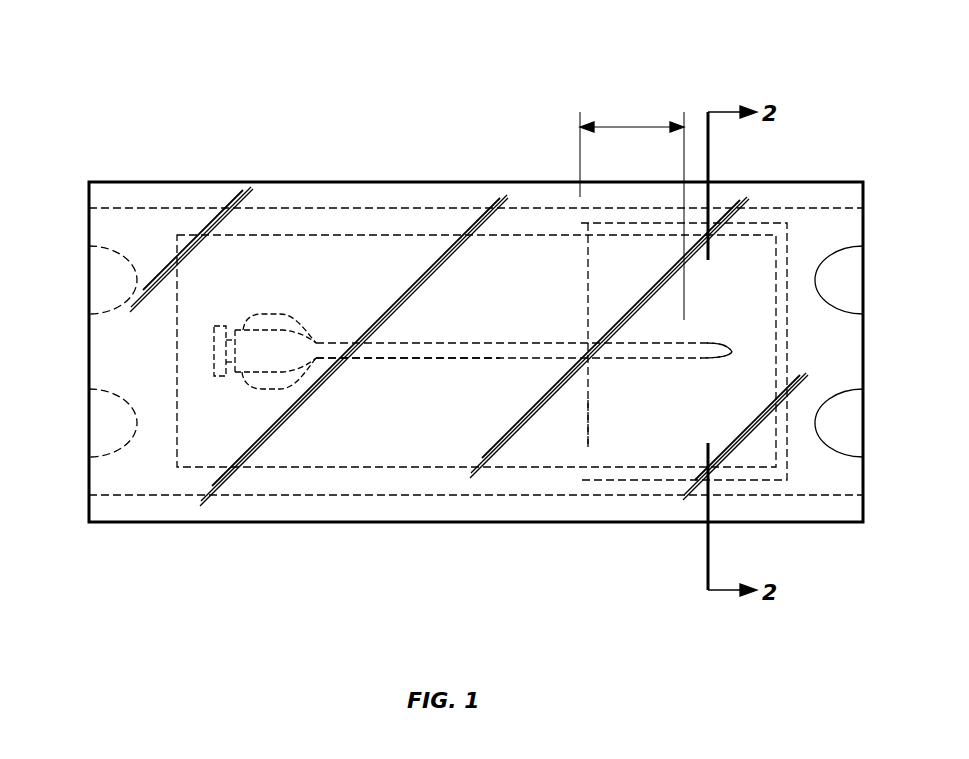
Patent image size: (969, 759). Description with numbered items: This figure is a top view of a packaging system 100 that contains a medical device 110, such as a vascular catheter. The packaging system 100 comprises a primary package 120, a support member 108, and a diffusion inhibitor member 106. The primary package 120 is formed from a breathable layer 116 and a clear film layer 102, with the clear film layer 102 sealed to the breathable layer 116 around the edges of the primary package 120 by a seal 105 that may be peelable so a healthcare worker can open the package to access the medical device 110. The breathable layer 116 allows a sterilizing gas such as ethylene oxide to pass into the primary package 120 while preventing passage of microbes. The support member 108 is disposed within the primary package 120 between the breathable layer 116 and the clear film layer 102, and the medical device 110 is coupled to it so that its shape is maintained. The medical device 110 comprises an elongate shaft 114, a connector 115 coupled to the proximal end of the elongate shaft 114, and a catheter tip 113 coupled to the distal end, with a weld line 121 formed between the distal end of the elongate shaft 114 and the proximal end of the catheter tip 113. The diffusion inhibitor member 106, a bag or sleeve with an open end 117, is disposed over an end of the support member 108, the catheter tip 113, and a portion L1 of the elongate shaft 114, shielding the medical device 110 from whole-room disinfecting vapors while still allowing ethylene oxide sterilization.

The packaging system 100 is at (298, 118).
The clear film layer 102 is at (169, 487).
The seal 105 is at (150, 207).
The diffusion inhibitor member 106 is at (603, 481).
The support member 108 is at (440, 425).
The medical device 110 is at (503, 345).
The catheter tip 113 is at (700, 360).
The elongate shaft 114 is at (397, 359).
The connector 115 is at (261, 382).
The breathable layer 116 is at (147, 462).
The open end 117 is at (586, 447).
The primary package 120 is at (800, 182).
The weld line 121 is at (657, 358).
The portion of the elongate shaft L1 is at (630, 126).